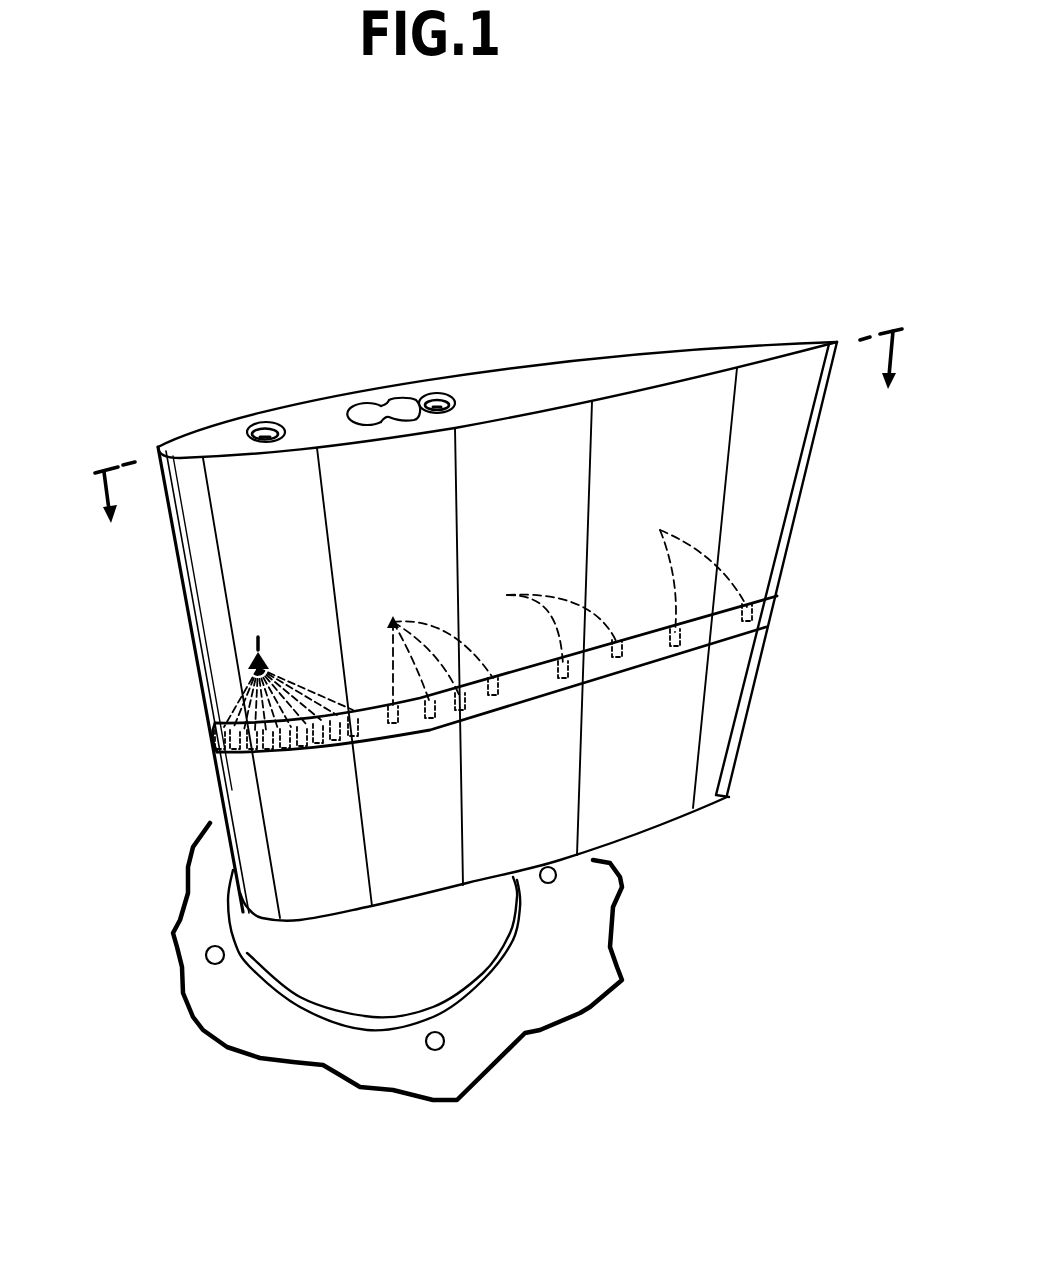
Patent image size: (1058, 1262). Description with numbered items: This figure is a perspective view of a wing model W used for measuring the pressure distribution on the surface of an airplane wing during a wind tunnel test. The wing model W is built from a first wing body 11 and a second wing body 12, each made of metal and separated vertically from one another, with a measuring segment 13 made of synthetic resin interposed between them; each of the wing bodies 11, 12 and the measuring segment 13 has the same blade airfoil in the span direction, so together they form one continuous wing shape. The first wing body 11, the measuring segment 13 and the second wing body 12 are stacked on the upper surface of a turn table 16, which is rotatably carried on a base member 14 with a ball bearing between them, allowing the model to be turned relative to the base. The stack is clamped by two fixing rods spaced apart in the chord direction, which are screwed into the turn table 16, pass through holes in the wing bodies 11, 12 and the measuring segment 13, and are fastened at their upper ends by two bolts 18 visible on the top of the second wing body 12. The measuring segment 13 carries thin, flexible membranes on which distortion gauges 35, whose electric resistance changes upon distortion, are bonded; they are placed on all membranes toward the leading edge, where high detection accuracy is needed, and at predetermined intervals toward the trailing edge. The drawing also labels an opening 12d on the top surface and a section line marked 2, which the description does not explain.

The first wing body 11 is at (208, 792).
The second wing body 12 is at (176, 602).
The dovetail slot 12d is at (361, 405).
The measuring segment 13 is at (202, 744).
The base member 14 is at (592, 932).
The turn table 16 is at (323, 993).
The bolts 18 is at (265, 431).
The distortion gauges 35 is at (483, 622).
The wing model W is at (568, 356).
The section line 2- 2 is at (497, 439).